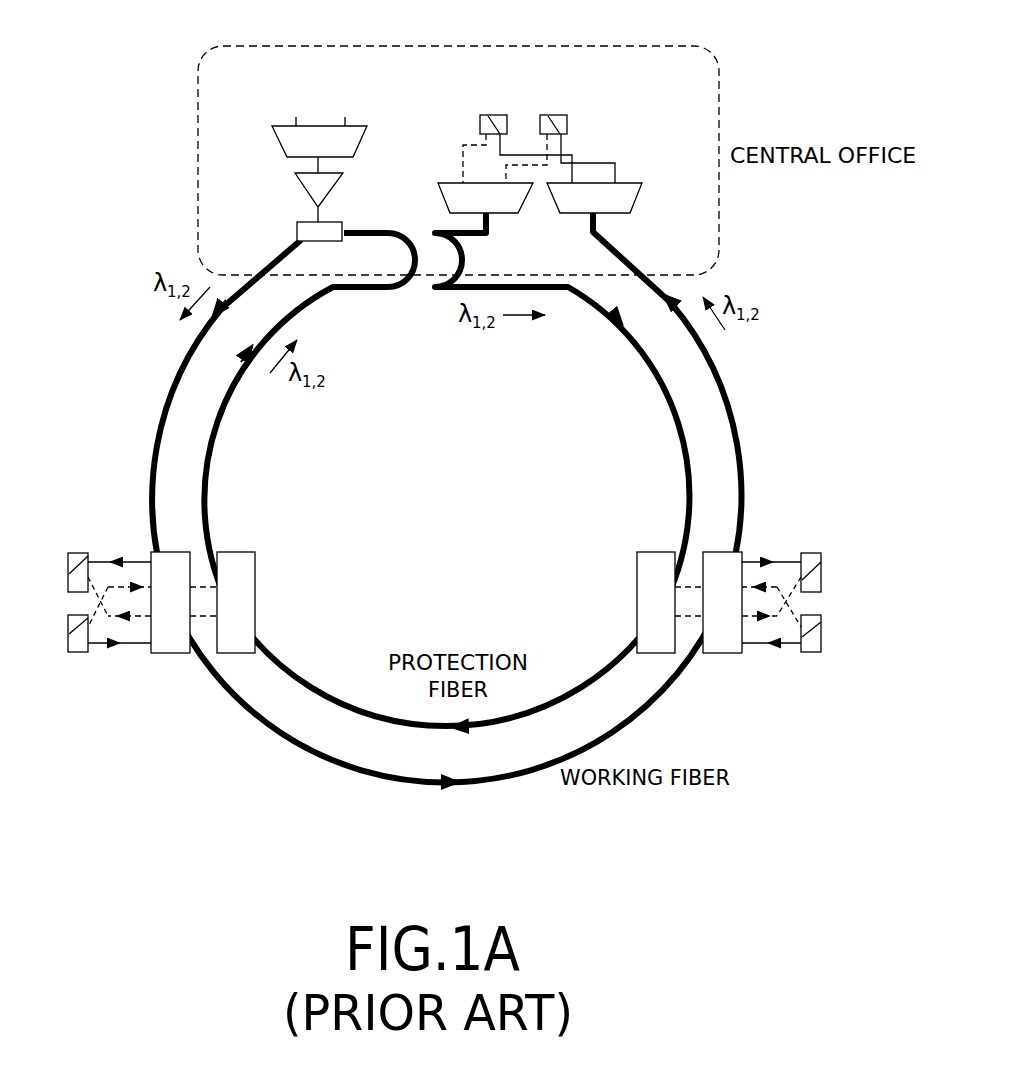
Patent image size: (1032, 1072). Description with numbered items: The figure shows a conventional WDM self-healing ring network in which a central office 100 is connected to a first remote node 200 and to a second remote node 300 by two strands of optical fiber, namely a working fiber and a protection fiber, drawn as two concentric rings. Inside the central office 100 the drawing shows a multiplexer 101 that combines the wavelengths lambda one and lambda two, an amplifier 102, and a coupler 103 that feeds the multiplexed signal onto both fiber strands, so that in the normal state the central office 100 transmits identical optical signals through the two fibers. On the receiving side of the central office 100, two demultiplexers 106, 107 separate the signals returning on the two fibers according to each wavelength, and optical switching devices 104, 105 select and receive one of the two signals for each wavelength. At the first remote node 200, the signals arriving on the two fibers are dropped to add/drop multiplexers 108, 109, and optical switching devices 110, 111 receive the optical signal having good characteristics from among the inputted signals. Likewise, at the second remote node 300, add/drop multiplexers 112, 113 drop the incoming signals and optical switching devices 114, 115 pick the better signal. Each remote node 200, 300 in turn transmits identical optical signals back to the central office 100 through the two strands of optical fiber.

The central office 100 is at (464, 46).
The multiplexer (MUX) 101 is at (271, 142).
The EDFA optical amplifier 102 is at (308, 193).
The coupler 103 is at (297, 232).
The optical switching device 104 is at (480, 126).
The optical switching device 105 is at (568, 122).
The demultiplexer (DMUX) 106 is at (440, 200).
The demultiplexer (DMUX) 107 is at (642, 199).
The add/drop multiplexer 108 is at (171, 551).
The add/drop multiplexer 109 is at (238, 551).
The optical switching device 110 is at (79, 552).
The optical switching device 111 is at (78, 654).
The add/drop multiplexer 112 is at (716, 551).
The add/drop multiplexer 113 is at (656, 551).
The optical switching device 114 is at (812, 552).
The optical switching device 115 is at (811, 654).
The first remote node 200 is at (81, 432).
The second remote node 300 is at (809, 432).